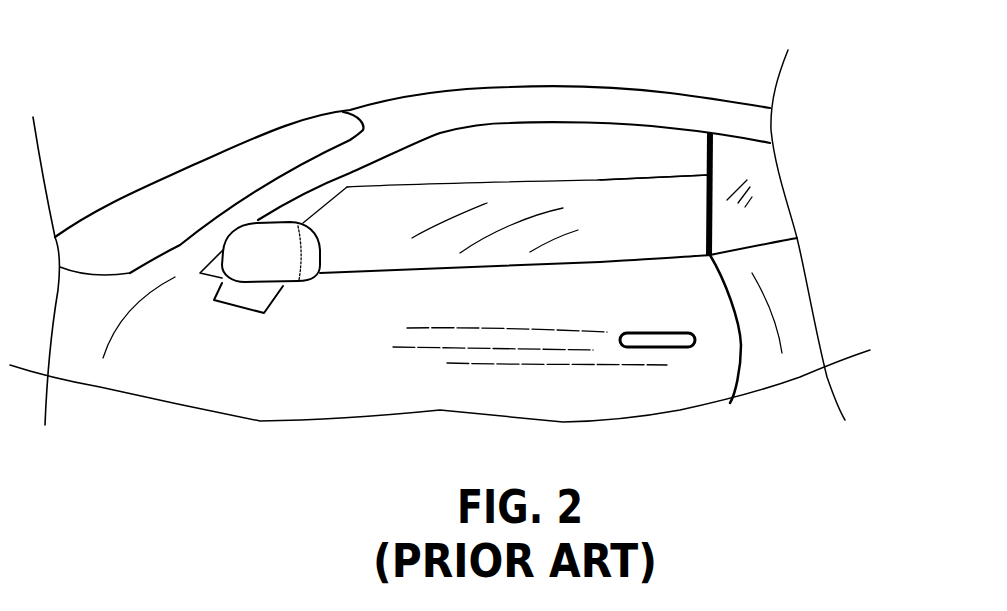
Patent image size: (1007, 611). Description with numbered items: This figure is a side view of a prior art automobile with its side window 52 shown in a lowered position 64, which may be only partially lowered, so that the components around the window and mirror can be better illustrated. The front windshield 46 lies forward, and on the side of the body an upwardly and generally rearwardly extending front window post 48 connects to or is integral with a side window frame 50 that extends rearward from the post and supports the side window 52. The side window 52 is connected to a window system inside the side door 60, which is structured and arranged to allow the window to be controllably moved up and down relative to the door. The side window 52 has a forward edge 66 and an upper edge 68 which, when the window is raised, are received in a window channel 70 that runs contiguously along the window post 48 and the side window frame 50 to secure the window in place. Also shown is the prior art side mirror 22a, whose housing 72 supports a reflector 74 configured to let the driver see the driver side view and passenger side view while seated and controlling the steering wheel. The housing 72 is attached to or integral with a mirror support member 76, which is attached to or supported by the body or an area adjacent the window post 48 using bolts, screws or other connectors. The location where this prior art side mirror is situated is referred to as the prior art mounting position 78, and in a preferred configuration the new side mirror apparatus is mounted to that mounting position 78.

The prior art side mirror 22a is at (263, 263).
The front windshield 46 is at (195, 192).
The front window post 48 is at (323, 167).
The side window frame 50 is at (537, 122).
The side window 52 is at (597, 200).
The side door 60 is at (648, 400).
The lowered position 64 is at (706, 116).
The forward edge 66 is at (305, 201).
The upper edge 68 is at (640, 165).
The window channel 70 is at (468, 140).
The housing 72 is at (247, 252).
The reflector 74 is at (307, 262).
The mirror support member 76 is at (230, 297).
The prior art mounting position 78 is at (244, 329).